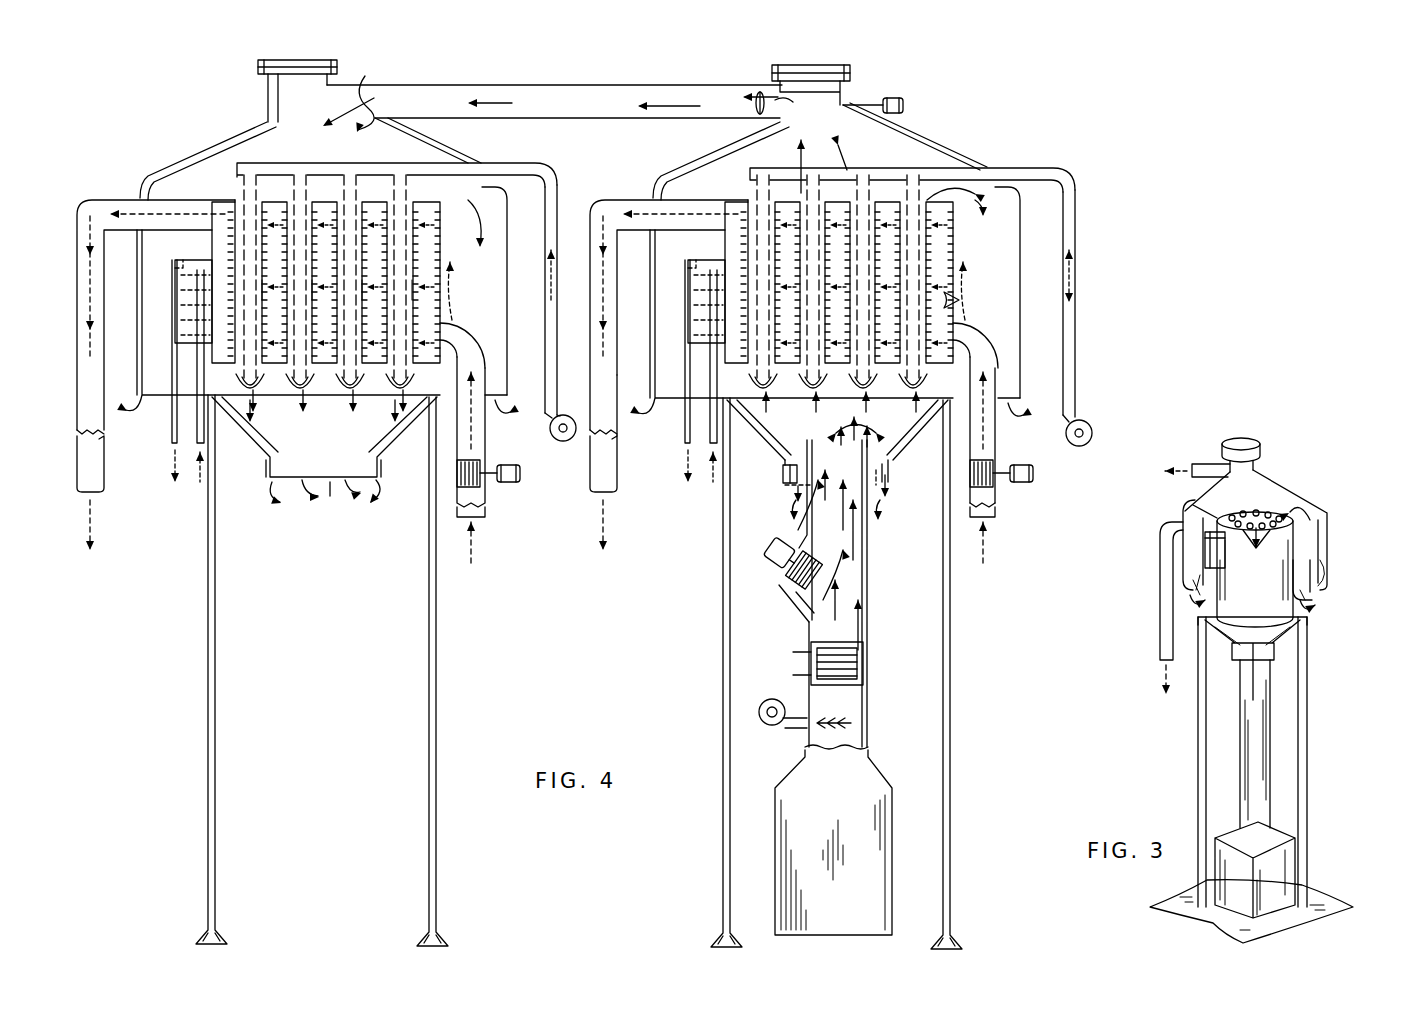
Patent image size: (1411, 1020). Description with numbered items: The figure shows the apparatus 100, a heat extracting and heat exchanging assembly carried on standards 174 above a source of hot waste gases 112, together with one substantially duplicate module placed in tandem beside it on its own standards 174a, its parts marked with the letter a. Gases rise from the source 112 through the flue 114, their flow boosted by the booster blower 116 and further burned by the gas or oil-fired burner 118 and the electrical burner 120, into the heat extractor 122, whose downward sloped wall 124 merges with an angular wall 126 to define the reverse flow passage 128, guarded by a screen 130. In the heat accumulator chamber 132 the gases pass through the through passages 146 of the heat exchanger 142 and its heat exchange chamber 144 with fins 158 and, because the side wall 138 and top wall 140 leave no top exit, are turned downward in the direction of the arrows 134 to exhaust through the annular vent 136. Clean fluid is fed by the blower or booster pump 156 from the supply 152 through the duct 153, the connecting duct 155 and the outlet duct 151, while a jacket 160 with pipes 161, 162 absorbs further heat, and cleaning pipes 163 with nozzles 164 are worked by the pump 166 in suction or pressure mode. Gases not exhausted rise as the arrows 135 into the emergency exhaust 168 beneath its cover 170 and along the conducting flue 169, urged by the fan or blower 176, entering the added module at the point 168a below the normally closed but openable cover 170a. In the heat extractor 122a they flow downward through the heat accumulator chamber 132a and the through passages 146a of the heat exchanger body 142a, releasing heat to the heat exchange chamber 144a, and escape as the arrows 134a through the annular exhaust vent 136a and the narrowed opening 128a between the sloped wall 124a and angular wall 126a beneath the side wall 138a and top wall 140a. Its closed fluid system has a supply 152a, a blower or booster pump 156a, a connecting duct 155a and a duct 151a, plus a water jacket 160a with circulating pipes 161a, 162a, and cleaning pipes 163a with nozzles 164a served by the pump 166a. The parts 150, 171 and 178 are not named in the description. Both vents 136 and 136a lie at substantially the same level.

In FIG. 4, the apparatus 100 is at (1088, 102).
In FIG. 3, the apparatus 100 is at (1332, 440).
In FIG. 4, the source of hot waste gases 112 is at (856, 840).
In FIG. 3, the source of hot waste gases 112 is at (1228, 898).
In FIG. 4, the flue 114 is at (859, 593).
In FIG. 3, the flue 114 is at (1272, 722).
In FIG. 4, the booster blower 116 is at (779, 578).
In FIG. 4, the gas or oil-fired burner 118 is at (795, 731).
In FIG. 4, the electrical burner 120 is at (858, 672).
In FIG. 4, the heat extractor 122 is at (706, 402).
In FIG. 4, the heat extractor 122a is at (252, 460).
In FIG. 4, the downward sloped wall 124 is at (837, 435).
In FIG. 4, the downward sloped wall 124a is at (408, 422).
In FIG. 4, the angular wall 126 is at (908, 484).
In FIG. 3, the angular wall 126 is at (1276, 650).
In FIG. 4, the angular wall 126a is at (377, 467).
In FIG. 4, the reverse flow passage 128 is at (766, 473).
In FIG. 4, the narrowed opening 128a is at (344, 503).
In FIG. 4, the screen 130 is at (774, 496).
In FIG. 4, the heat accumulator chamber 132 is at (911, 283).
In FIG. 4, the heat accumulator chamber 132a is at (492, 184).
In FIG. 4, the arrows 134 is at (784, 284).
In FIG. 4, the arrows 134a is at (222, 143).
In FIG. 4, the arrows 135 is at (815, 145).
In FIG. 4, the annular vent 136 is at (831, 325).
In FIG. 3, the annular vent 136 is at (1209, 584).
In FIG. 4, the annular exhaust vent 136a is at (168, 392).
In FIG. 4, the side wall 138 is at (1051, 303).
In FIG. 3, the side wall 138 is at (1331, 518).
In FIG. 4, the side wall 138a is at (558, 190).
In FIG. 4, the top wall 140 is at (824, 151).
In FIG. 4, the top wall 140a is at (163, 174).
In FIG. 4, the heat exchanger 142 is at (976, 203).
In FIG. 4, the heat exchanger body 142a is at (476, 207).
In FIG. 4, the heat exchange chamber 144 is at (975, 303).
In FIG. 3, the heat exchange chamber 144 is at (1304, 530).
In FIG. 4, the heat exchange chamber 144a is at (441, 259).
In FIG. 4, the passages 146 is at (838, 293).
In FIG. 3, the passages 146 is at (1264, 546).
In FIG. 4, the through passages 146a is at (336, 188).
In FIG. 4, the inner wall 150 is at (645, 409).
In FIG. 4, the outlet duct 151 is at (629, 490).
In FIG. 3, the outlet duct 151 is at (1159, 636).
In FIG. 4, the duct 151a is at (107, 454).
In FIG. 4, the fluid supply 152 is at (1011, 534).
In FIG. 3, the fluid supply 152 is at (1316, 577).
In FIG. 4, the supply 152a is at (488, 516).
In FIG. 4, the duct 153 is at (1009, 430).
In FIG. 4, the connecting duct 155 is at (669, 304).
In FIG. 3, the connecting duct 155 is at (1182, 510).
In FIG. 4, the connecting duct 155a is at (122, 200).
In FIG. 4, the blower or booster pump 156 is at (1009, 487).
In FIG. 4, the blower or booster pump 156a is at (485, 493).
In FIG. 4, the heat exchanging fins 158 is at (974, 303).
In FIG. 4, the jacket 160 is at (705, 289).
In FIG. 3, the jacket 160 is at (1228, 566).
In FIG. 4, the water jacket 160a is at (204, 262).
In FIG. 4, the pipe 161 is at (665, 371).
In FIG. 4, the circulating pipe 161a is at (171, 432).
In FIG. 4, the pipe 162 is at (686, 388).
In FIG. 4, the circulating pipe 162a is at (202, 464).
In FIG. 4, the pipes 163 is at (929, 137).
In FIG. 4, the pipes 163a is at (428, 144).
In FIG. 4, the nozzles 164 is at (864, 249).
In FIG. 4, the nozzles 164a is at (319, 155).
In FIG. 4, the pump 166 is at (1099, 420).
In FIG. 4, the pump 166a is at (556, 440).
In FIG. 4, the emergency exhaust 168 is at (844, 92).
In FIG. 3, the emergency exhaust 168 is at (1256, 467).
In FIG. 4, the connection point 168a is at (268, 95).
In FIG. 4, the conducting flue 169 is at (586, 84).
In FIG. 3, the conducting flue 169 is at (1200, 464).
In FIG. 4, the cover 170 is at (822, 58).
In FIG. 3, the cover 170 is at (1239, 438).
In FIG. 4, the cover 170a is at (298, 60).
In FIG. 4, the flow arrows 171 is at (840, 517).
In FIG. 4, the standards 174 is at (835, 673).
In FIG. 3, the standards 174 is at (1197, 787).
In FIG. 4, the standards 174a is at (208, 673).
In FIG. 4, the fan or blower 176 is at (730, 87).
In FIG. 4, the flow path 178 is at (365, 78).